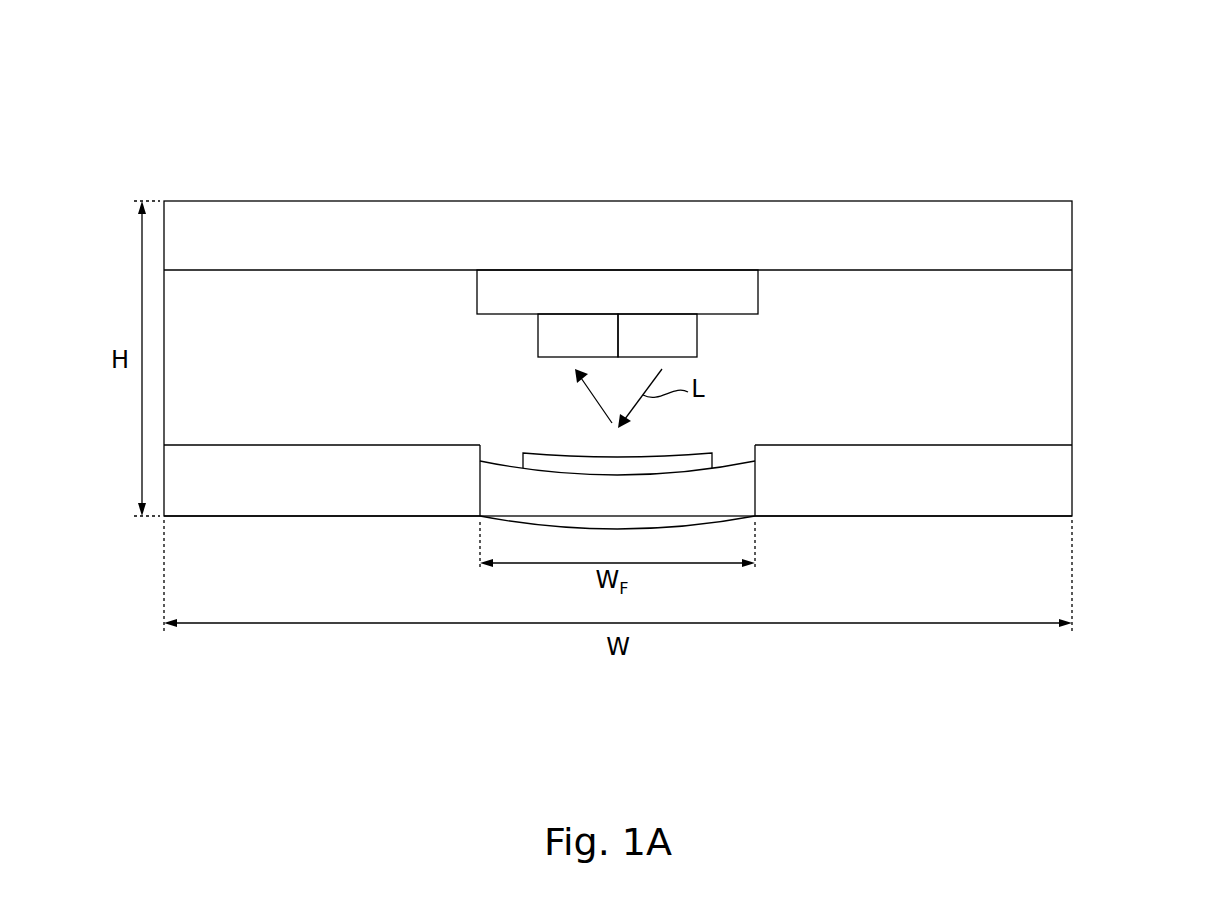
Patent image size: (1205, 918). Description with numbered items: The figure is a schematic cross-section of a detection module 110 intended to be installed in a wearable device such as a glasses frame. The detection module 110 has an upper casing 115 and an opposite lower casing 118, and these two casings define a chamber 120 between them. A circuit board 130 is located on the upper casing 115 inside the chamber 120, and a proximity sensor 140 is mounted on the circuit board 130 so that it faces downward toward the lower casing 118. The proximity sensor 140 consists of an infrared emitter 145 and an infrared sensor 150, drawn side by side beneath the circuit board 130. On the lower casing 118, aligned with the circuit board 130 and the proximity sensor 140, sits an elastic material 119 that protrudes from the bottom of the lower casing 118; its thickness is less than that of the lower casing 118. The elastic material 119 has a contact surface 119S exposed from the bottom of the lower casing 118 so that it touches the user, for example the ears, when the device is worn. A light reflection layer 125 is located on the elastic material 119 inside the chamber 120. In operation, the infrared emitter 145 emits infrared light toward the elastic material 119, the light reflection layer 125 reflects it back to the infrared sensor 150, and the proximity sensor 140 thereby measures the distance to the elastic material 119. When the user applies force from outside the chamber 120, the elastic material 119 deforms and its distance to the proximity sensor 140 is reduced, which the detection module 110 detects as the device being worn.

The detection module 110 is at (133, 126).
The upper casing 115 is at (1058, 236).
The chamber 120 is at (1058, 353).
The light reflection layer 125 is at (693, 463).
The circuit board 130 is at (723, 285).
The proximity sensor 140 is at (599, 219).
The infrared emitter 145 is at (659, 330).
The infrared sensor 150 is at (578, 330).
The lower casing 118 is at (1058, 468).
The elastic material 119 is at (742, 497).
The contact surface 119S is at (723, 524).